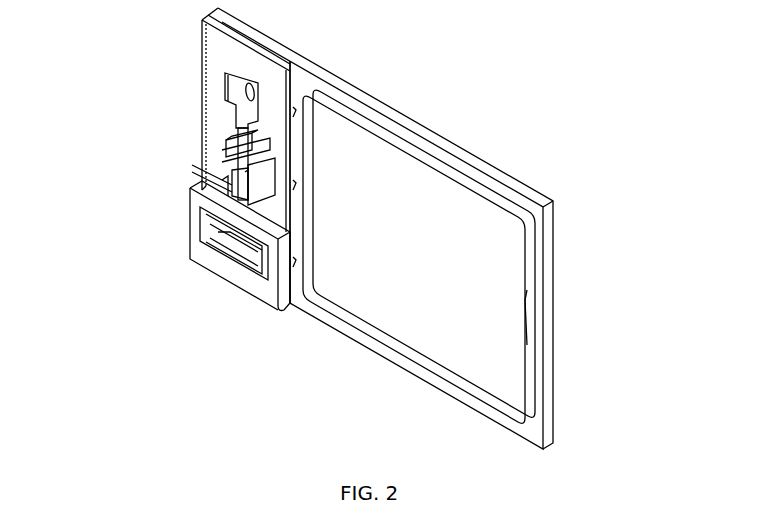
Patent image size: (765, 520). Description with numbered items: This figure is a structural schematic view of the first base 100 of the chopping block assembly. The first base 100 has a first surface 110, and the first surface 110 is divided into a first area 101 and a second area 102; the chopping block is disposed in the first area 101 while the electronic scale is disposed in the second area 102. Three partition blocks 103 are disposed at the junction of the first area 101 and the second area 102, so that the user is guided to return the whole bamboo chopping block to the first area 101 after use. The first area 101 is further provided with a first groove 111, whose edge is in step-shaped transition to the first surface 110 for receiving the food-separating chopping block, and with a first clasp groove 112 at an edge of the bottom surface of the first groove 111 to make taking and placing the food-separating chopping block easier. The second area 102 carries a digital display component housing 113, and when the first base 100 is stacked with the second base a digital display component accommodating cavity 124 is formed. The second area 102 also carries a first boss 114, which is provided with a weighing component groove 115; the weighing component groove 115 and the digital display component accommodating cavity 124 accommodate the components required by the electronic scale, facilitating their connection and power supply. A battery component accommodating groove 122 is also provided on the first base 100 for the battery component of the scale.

The first base 100 is at (652, 45).
The first area 101 is at (618, 228).
The second area 102 is at (132, 155).
The partition blocks 103 is at (300, 108).
The first surface 110 is at (442, 153).
The first groove 111 is at (497, 258).
The first clasp groove 112 is at (528, 292).
The digital display component housing 113 is at (207, 210).
The first boss 114 is at (212, 110).
The weighing component groove 115 is at (212, 60).
The battery component accommodating groove 122 is at (212, 150).
The digital display component accommodating cavity 124 is at (207, 243).